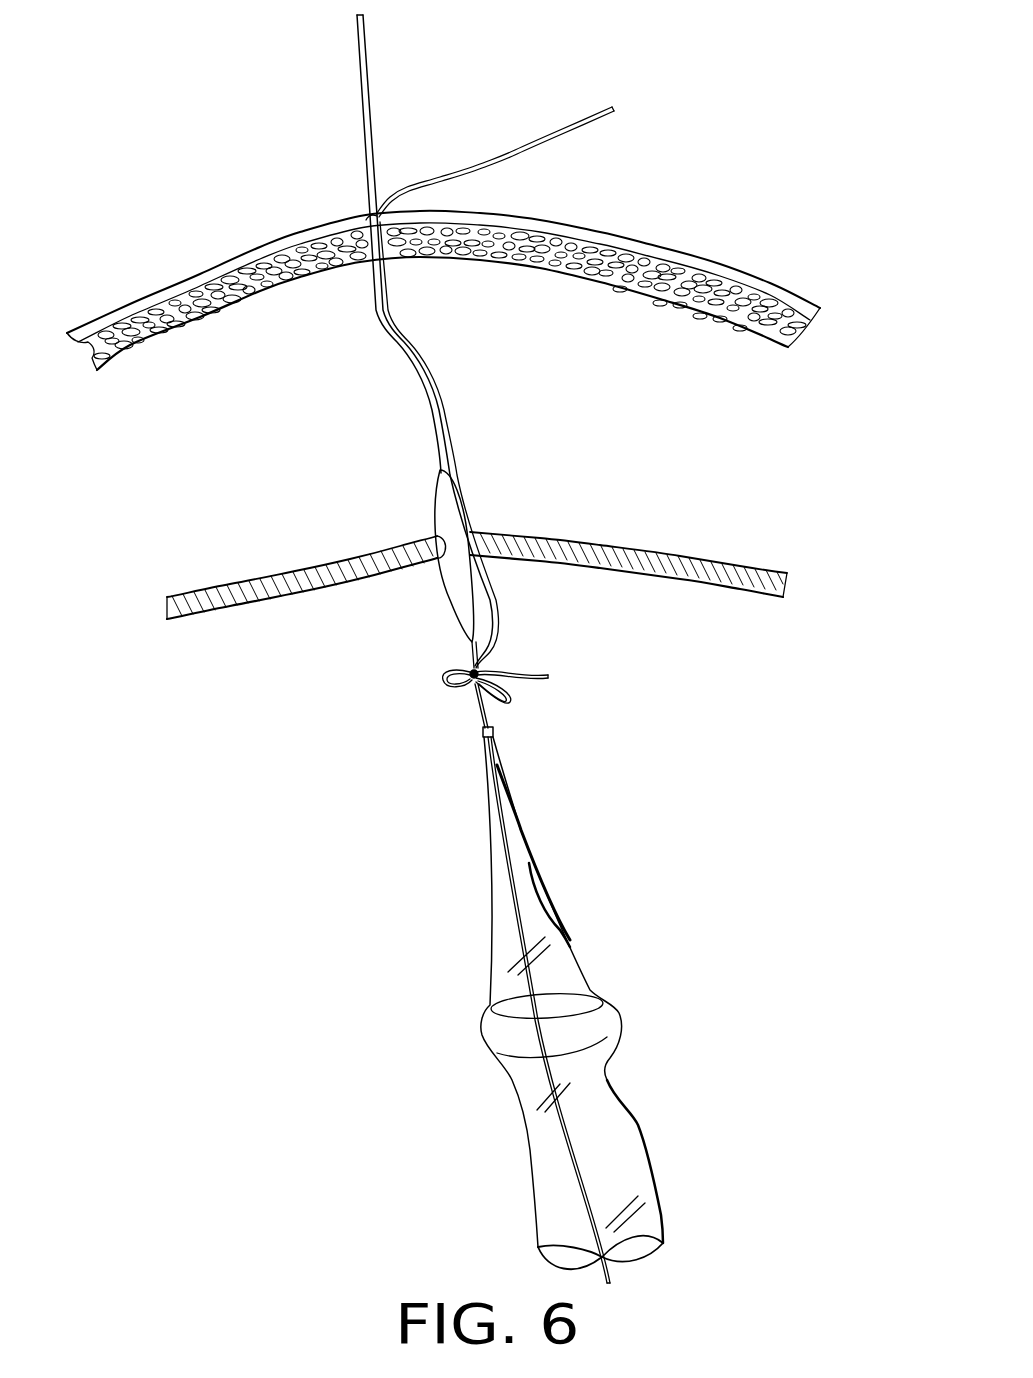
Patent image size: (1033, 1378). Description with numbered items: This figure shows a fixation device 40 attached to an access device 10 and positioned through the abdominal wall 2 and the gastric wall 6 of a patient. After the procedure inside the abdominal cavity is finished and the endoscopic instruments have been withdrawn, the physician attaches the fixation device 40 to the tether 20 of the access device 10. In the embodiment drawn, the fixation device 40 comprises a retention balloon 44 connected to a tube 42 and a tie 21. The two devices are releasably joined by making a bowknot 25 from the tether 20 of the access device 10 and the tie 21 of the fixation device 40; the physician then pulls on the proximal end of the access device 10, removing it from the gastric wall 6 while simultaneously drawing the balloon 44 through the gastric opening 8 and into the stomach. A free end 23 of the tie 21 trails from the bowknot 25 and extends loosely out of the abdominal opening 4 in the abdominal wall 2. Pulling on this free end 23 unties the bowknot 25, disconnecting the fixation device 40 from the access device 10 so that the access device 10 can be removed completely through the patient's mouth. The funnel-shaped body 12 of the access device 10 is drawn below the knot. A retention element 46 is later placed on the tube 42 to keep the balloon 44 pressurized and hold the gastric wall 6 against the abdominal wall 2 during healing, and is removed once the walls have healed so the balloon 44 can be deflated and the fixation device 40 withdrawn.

The abdominal wall 2 is at (553, 222).
The abdominal opening 4 is at (366, 220).
The gastric wall 6 is at (630, 546).
The gastric opening 8 is at (442, 537).
The access device 10 is at (653, 1010).
The funnel sheath 12 is at (524, 834).
The tether 20 is at (528, 675).
The tie 21 is at (498, 613).
The free end 23 is at (567, 120).
The bowknot 25 is at (462, 680).
The fixation device 40 is at (498, 341).
The tube 42 is at (373, 150).
The retention balloon 44 is at (438, 486).
The retention element 46 is at (496, 732).